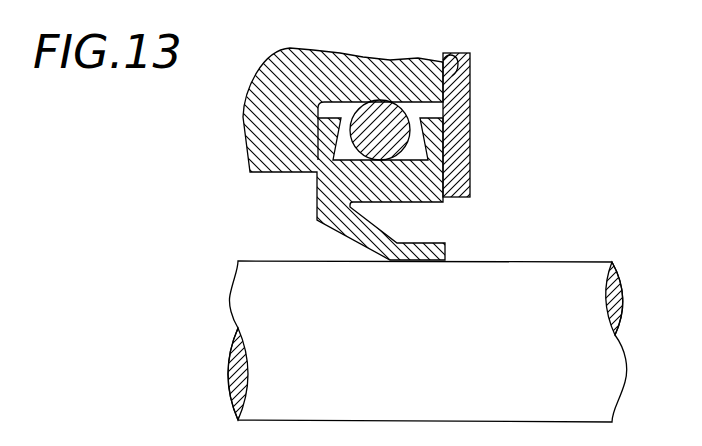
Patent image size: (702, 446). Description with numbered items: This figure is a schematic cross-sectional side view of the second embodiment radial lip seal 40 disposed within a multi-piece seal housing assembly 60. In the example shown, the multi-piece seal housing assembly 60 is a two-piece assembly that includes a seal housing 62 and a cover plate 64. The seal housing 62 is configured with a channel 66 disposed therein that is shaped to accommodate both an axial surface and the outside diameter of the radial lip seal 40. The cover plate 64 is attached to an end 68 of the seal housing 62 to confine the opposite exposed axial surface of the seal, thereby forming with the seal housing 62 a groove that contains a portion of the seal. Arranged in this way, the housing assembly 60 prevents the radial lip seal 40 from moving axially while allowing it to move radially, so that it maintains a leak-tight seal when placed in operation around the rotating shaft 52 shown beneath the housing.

The multi-piece seal housing assembly 60 is at (374, 130).
The seal housing 62 is at (410, 63).
The cover plate 64 is at (463, 125).
The channel 66 is at (320, 110).
The end of the seal housing 68 is at (462, 62).
The radial lip seal 40 is at (470, 212).
The rotating shaft 52 is at (530, 273).